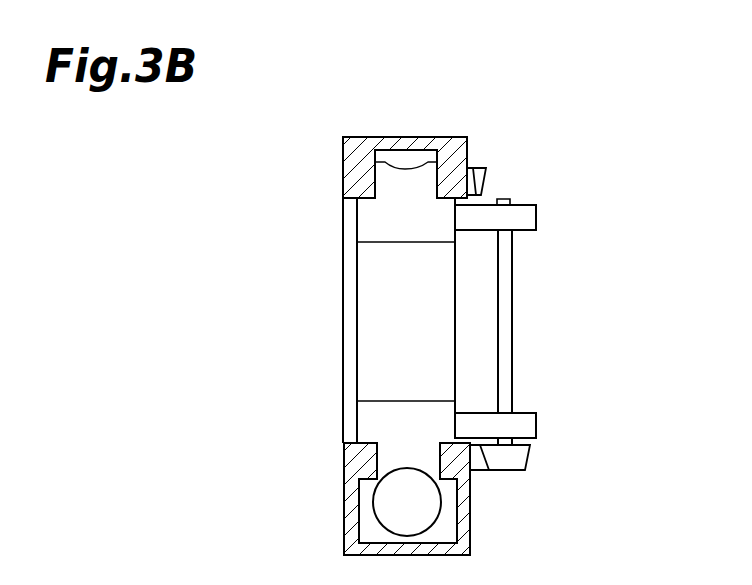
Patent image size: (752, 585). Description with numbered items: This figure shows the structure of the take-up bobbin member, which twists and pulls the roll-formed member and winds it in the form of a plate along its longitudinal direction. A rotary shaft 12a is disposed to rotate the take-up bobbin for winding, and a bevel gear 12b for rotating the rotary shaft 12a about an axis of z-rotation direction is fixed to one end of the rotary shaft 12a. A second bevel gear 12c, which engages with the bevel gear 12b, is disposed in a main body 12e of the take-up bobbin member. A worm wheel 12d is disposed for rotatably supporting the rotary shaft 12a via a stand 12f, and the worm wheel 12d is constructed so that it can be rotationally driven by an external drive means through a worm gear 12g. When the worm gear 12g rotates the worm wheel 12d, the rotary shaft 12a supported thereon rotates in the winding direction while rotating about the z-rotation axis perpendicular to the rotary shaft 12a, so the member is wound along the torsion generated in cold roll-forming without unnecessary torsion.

The rotary shaft 12a is at (511, 307).
The bevel gear 12b is at (527, 458).
The bevel gear 12c is at (485, 176).
The worm wheel 12d is at (392, 163).
The main body 12e is at (438, 137).
The stand 12f is at (528, 218).
The worm gear 12g is at (435, 510).